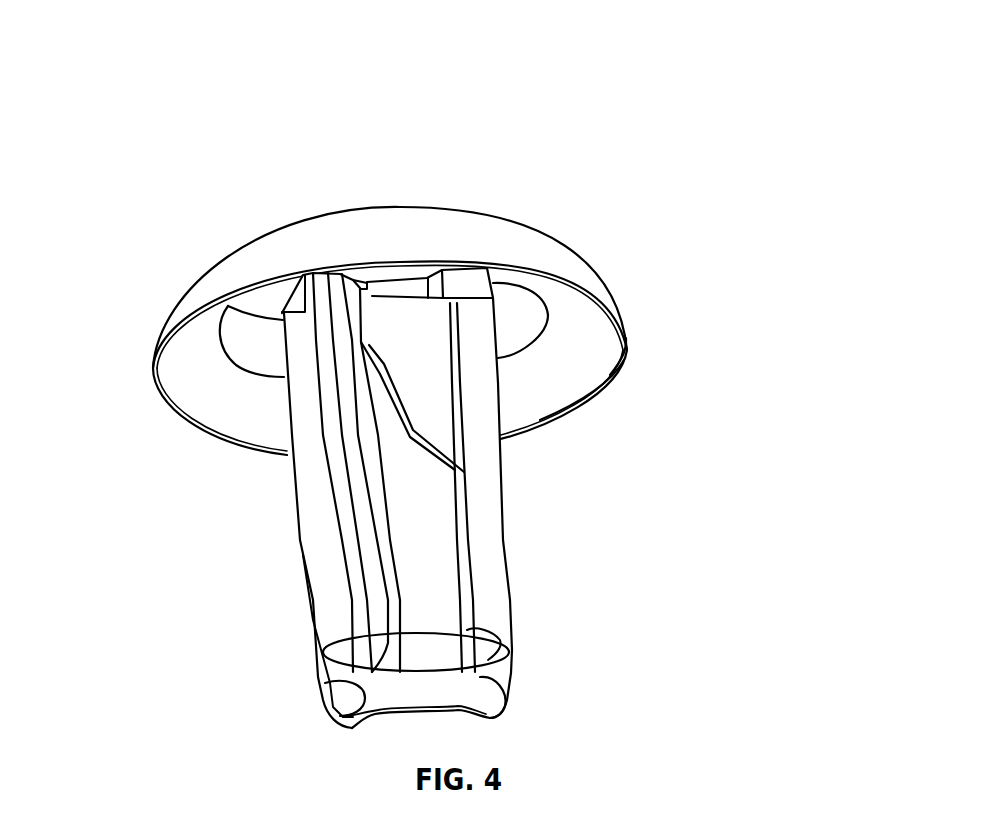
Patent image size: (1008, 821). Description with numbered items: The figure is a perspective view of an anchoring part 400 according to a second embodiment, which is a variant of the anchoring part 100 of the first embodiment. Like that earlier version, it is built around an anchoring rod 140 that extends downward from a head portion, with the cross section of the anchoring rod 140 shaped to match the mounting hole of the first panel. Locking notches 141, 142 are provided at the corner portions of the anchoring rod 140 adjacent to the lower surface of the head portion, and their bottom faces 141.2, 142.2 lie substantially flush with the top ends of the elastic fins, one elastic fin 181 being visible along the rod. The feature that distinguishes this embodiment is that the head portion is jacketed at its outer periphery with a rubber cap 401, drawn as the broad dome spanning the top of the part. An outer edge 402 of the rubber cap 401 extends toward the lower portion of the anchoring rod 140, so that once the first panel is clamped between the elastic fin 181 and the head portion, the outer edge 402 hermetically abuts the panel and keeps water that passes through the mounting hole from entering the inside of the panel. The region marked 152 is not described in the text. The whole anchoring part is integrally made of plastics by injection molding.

The anchoring part 400 is at (435, 180).
The anchoring part 100 is at (668, 446).
The anchoring rod 140 is at (503, 565).
The locking notch 141 is at (472, 283).
The bottom face 141.2 is at (625, 347).
The locking notch 142 is at (282, 313).
The bottom face 142.2 is at (220, 337).
The recess 152 is at (627, 313).
The elastic fin 181 is at (417, 402).
The rubber cap 401 is at (563, 262).
The outer edge 402 is at (540, 420).